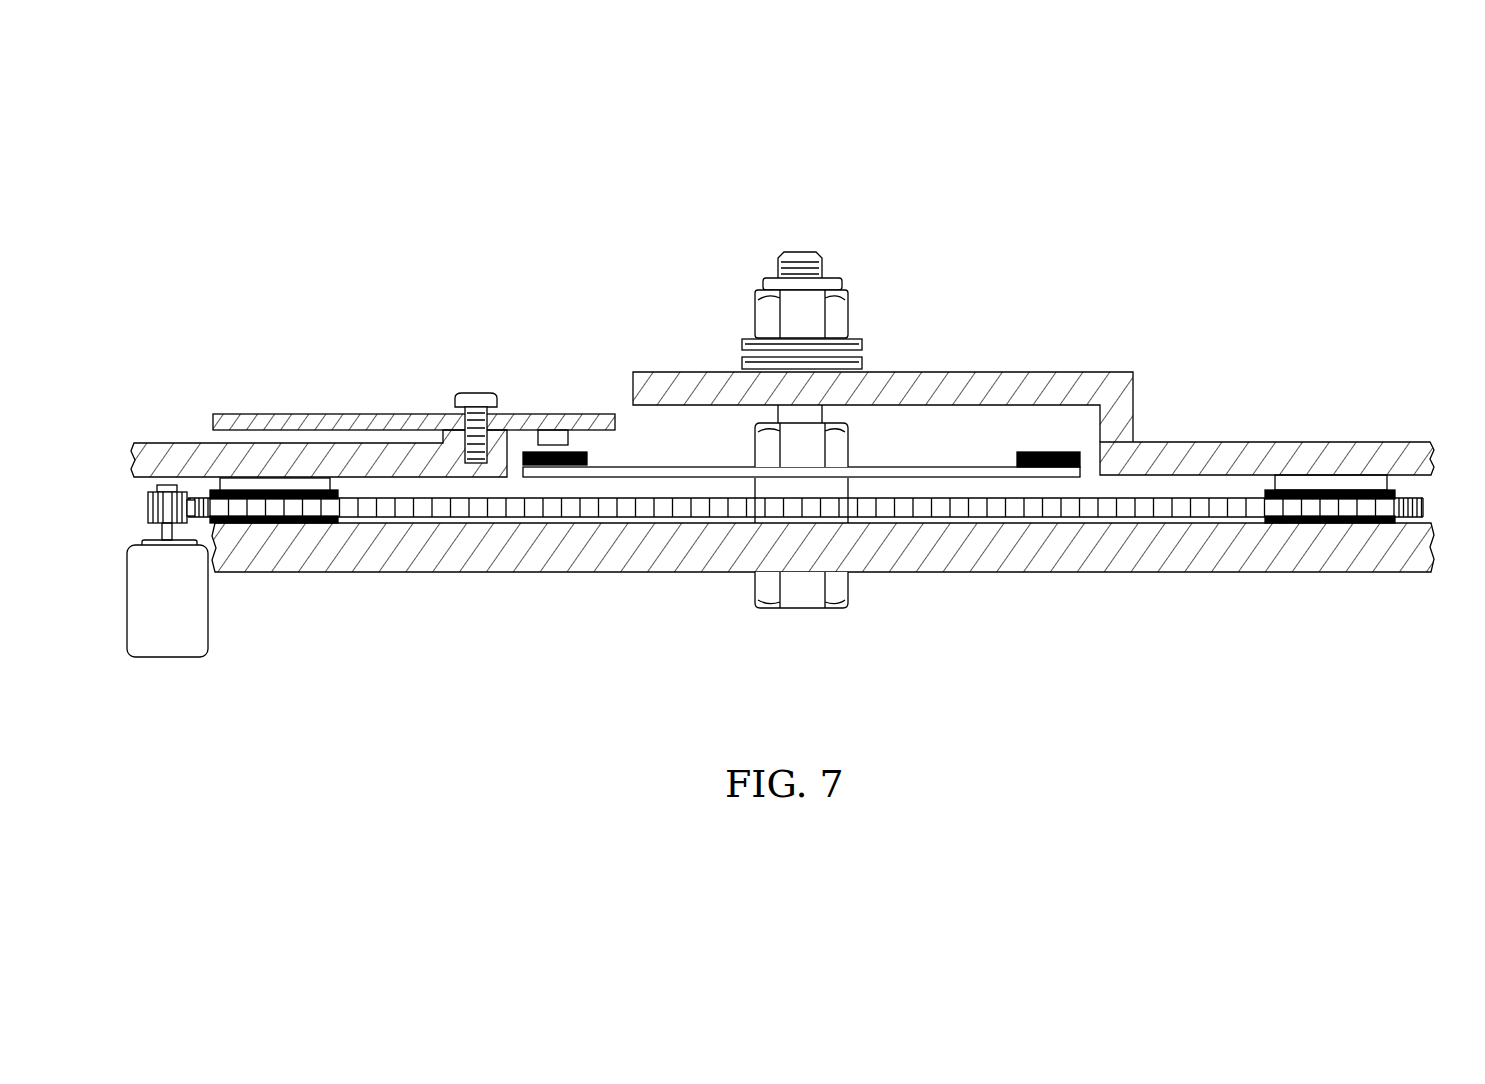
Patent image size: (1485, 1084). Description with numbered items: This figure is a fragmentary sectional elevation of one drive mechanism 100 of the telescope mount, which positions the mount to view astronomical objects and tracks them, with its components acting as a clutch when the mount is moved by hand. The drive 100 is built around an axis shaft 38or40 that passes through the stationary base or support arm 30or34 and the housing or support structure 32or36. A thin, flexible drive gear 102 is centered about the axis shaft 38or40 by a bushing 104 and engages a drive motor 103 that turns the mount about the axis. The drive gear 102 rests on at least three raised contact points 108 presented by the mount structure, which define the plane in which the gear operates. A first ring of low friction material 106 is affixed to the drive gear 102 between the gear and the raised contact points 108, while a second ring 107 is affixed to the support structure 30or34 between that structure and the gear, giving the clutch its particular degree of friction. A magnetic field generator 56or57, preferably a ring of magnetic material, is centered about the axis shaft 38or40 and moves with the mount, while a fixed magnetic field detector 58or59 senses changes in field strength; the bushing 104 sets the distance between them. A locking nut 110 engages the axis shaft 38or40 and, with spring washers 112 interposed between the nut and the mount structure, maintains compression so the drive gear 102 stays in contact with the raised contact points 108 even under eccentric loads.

The drive mechanism 100 is at (1032, 176).
The drive gear 102 is at (585, 505).
The drive motor 103 is at (167, 645).
The bushing 104 is at (765, 485).
The first ring of low friction material 106 is at (1249, 516).
The second ring of low friction material 107 is at (1350, 545).
The raised contact points 108 is at (282, 483).
The locking nut 110 is at (765, 320).
The spring elements 112 is at (882, 336).
The stationary base or support arm 30or34 is at (1013, 555).
The housing or support structure 32or36 is at (1228, 460).
The axis shaft 38or40 is at (817, 413).
The magnetic field generator 56or57 is at (580, 452).
The magnetic field detector 58or59 is at (553, 437).